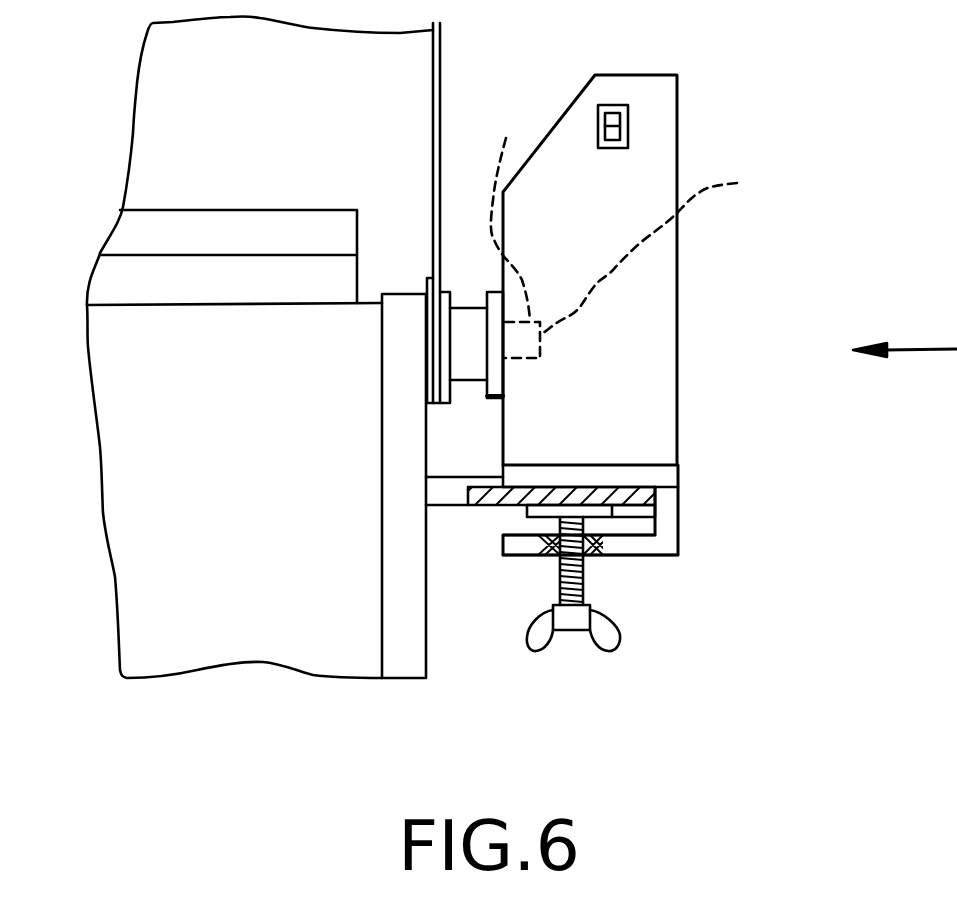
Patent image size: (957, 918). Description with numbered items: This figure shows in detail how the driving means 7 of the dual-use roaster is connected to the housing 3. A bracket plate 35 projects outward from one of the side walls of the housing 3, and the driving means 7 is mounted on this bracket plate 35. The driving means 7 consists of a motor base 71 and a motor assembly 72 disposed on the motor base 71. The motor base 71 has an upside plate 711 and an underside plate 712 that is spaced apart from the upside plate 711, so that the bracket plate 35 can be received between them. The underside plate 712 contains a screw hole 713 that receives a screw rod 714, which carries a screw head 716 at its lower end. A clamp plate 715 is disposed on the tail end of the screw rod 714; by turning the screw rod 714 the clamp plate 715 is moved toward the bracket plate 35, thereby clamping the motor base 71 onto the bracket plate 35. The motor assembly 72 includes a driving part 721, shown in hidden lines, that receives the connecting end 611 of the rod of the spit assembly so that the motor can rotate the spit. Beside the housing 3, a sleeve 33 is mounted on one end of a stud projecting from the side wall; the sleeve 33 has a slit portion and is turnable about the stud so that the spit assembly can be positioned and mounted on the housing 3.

The housing 3 is at (405, 653).
The sleeve 33 is at (468, 307).
The bracket plate 35 is at (450, 497).
The connecting end 611 is at (517, 232).
The driving means 7 is at (642, 281).
The motor assembly 72 is at (647, 345).
The driving part 721 is at (678, 285).
The upside plate 711 is at (573, 478).
The motor base 71 is at (640, 565).
The underside plate 712 is at (630, 543).
The screw hole 713 is at (533, 557).
The screw rod 714 is at (583, 580).
The clamp plate 715 is at (615, 517).
The screw head 716 is at (548, 652).